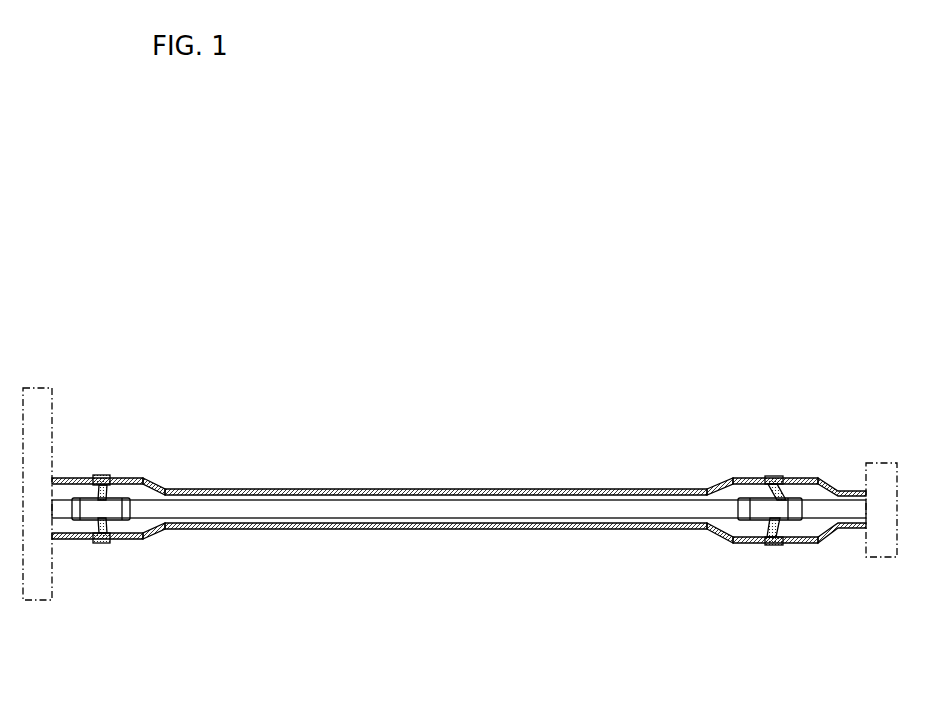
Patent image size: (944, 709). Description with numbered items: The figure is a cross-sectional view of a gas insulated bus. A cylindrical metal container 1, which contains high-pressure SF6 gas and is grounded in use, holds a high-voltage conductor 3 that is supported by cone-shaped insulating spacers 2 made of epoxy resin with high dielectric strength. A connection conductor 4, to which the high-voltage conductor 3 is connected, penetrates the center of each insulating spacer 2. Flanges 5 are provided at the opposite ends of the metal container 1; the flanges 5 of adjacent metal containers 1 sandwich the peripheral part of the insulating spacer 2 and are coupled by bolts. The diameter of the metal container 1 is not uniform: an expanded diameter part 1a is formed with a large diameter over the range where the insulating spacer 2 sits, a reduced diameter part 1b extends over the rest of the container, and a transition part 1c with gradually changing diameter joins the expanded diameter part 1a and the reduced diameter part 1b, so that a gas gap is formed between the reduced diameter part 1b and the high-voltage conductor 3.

The metal container 1 is at (459, 508).
The expanded diameter part 1a is at (138, 478).
The reduced diameter part 1b is at (238, 490).
The transition part 1c is at (153, 537).
The insulating spacer 2 is at (103, 478).
The high-voltage conductor 3 is at (62, 508).
The connection conductor 4 is at (88, 510).
The flange 5 is at (784, 544).